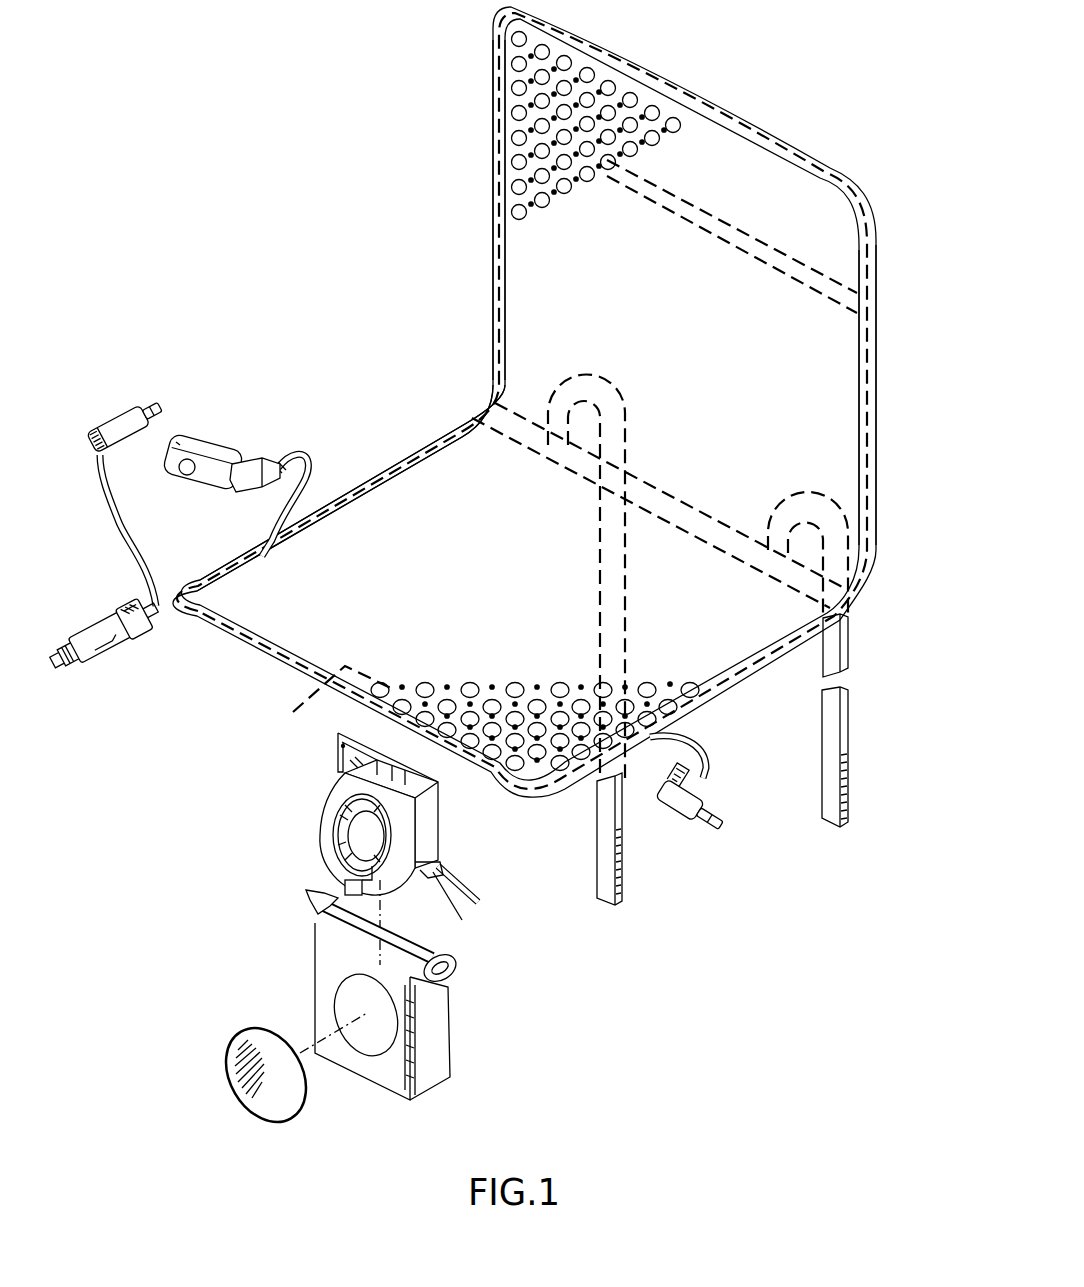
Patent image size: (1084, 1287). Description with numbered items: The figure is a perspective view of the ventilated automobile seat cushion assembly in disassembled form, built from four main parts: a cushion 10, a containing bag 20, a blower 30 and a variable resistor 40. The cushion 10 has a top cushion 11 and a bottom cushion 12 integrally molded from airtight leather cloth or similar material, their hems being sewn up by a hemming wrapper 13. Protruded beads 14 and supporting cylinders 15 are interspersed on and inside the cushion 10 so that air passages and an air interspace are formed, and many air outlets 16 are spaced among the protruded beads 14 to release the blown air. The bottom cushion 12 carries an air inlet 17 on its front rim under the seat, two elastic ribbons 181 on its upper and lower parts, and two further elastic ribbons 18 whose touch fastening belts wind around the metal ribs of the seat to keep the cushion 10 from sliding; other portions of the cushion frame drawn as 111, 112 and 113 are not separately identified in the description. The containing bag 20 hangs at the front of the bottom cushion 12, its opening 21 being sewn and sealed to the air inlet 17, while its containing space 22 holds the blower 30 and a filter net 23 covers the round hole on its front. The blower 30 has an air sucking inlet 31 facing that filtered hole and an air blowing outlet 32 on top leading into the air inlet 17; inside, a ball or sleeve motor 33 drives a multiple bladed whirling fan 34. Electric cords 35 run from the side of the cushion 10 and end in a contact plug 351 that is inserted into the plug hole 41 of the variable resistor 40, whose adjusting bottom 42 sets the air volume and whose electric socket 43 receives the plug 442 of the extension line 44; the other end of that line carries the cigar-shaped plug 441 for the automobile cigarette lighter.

The cushion 10 is at (548, 456).
The top cushion 11 is at (845, 345).
The bottom cushion 12 is at (867, 404).
The hemming wrapper 13 is at (870, 457).
The protruded beads 14 is at (692, 697).
The supporting cylinders 15 is at (570, 803).
The air outlets 16 is at (670, 681).
The air inlet 17 is at (320, 690).
The elastic ribbons 18 is at (849, 727).
The backrest left frame tube 111 is at (522, 270).
The frame bend 112 is at (513, 400).
The seat frame tube 113 is at (383, 500).
The elastic ribbons 181 is at (798, 257).
The containing bag 20 is at (416, 995).
The opening 21 is at (400, 942).
The containing space 22 is at (455, 963).
The filter net 23 is at (243, 1043).
The blower 30 is at (390, 814).
The air sucking inlet 31 is at (390, 836).
The air blowing outlet 32 is at (440, 781).
The ball or sleeve motor 33 is at (362, 834).
The multiple bladed whirling fan 34 is at (347, 813).
The electric cords 35 is at (655, 742).
The contact plug 351 is at (693, 820).
The variable resistor 40 is at (224, 432).
The plug hole 41 is at (242, 464).
The adjusting bottom 42 is at (184, 472).
The electric socket 43 is at (178, 435).
The extension line 44 is at (115, 533).
The DC plug 441 is at (108, 440).
The plug 442 is at (125, 633).